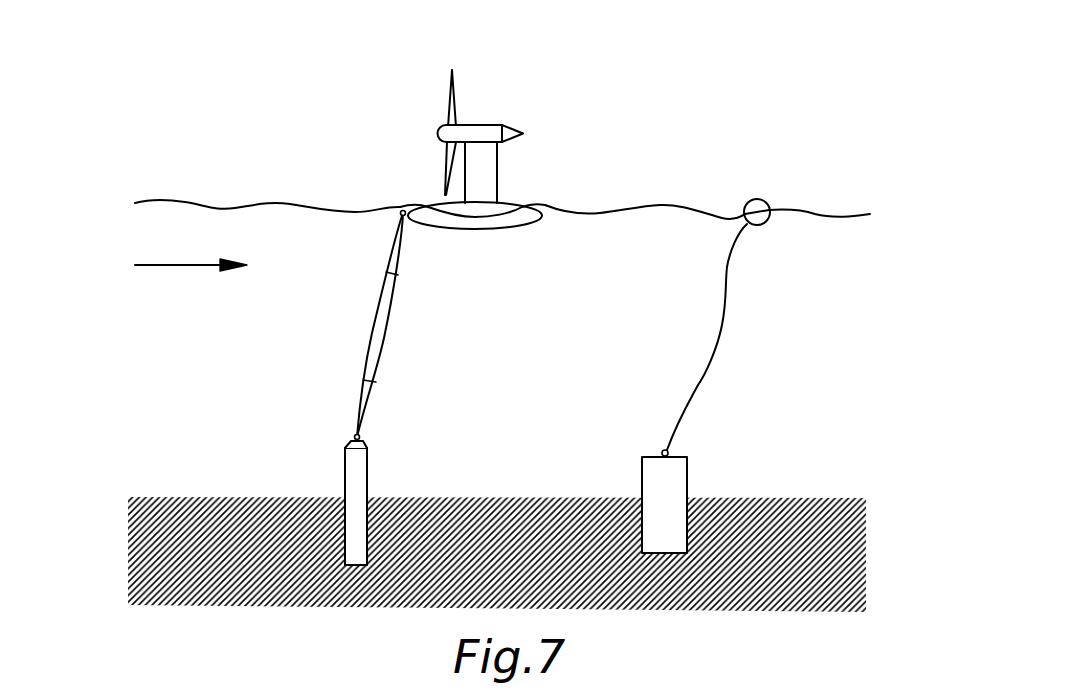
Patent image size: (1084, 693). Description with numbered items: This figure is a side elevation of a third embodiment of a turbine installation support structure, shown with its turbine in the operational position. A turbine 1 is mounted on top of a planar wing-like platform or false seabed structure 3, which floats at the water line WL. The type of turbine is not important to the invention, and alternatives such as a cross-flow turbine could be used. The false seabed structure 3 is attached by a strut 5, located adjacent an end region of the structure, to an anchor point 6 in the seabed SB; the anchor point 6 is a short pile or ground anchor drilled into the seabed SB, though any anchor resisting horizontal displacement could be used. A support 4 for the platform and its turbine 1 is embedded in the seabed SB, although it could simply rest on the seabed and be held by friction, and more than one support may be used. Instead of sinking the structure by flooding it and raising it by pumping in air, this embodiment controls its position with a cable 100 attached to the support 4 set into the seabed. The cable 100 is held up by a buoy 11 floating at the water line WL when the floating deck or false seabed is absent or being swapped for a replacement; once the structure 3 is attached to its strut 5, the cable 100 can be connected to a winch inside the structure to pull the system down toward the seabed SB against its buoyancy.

The turbine 1 is at (448, 111).
The planar wing-like platform or false seabed structure 3 is at (520, 217).
The support 4 is at (677, 480).
The strut 5 is at (374, 337).
The anchor point 6 is at (360, 478).
The buoy 11 is at (762, 199).
The cable 100 is at (711, 348).
The water line WL is at (200, 203).
The seabed SB is at (192, 513).